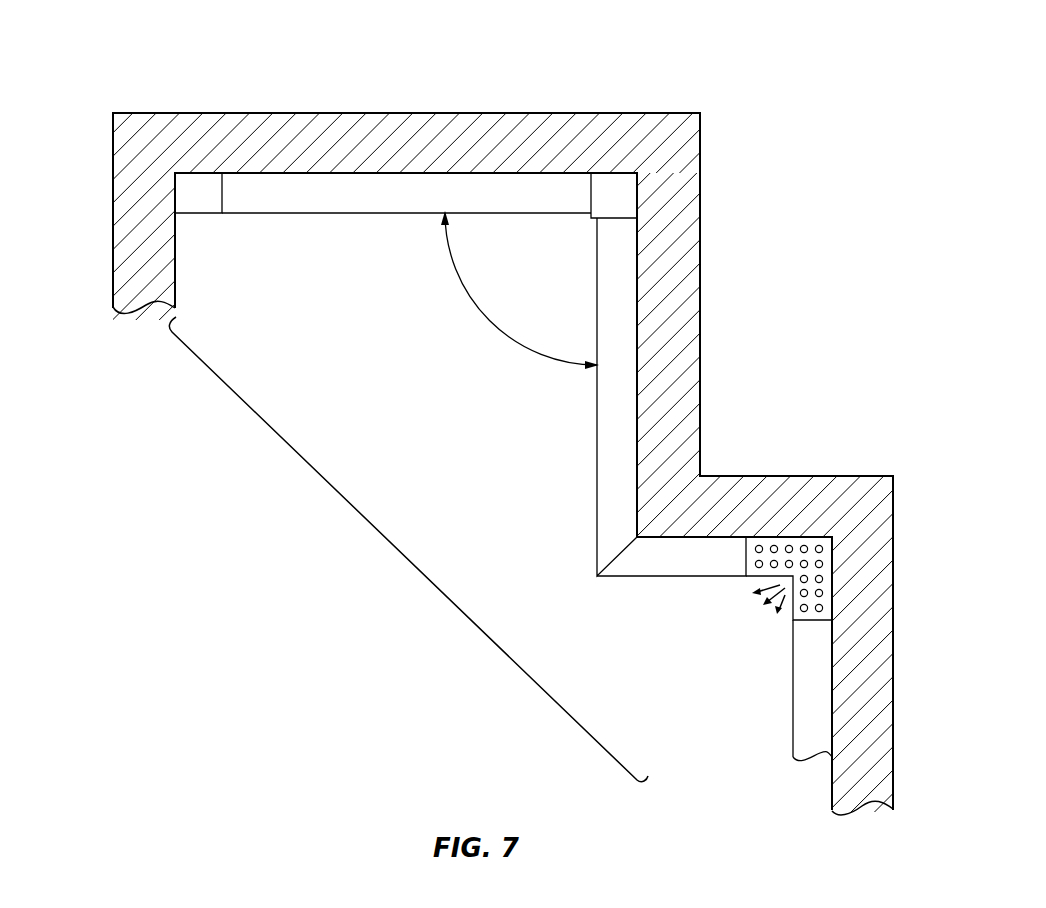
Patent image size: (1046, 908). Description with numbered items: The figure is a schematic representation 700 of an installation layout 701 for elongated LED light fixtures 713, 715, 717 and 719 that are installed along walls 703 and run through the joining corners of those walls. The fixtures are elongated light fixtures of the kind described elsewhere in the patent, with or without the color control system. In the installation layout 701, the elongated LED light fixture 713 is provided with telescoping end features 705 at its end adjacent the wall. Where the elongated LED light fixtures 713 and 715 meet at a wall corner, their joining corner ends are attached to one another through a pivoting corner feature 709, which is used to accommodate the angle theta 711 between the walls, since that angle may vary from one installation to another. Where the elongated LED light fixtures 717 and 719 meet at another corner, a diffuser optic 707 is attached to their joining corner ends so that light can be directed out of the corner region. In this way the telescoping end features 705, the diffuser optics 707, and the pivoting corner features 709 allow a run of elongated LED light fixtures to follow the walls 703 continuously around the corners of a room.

The schematic representation 700 is at (95, 82).
The installation layout 701 is at (403, 554).
The walls 703 is at (693, 307).
The telescoping end features 705 is at (198, 205).
The diffuser optics 707 is at (793, 621).
The pivoting corner features 709 is at (595, 212).
The angle θ 711 is at (485, 318).
The elongated LED light fixture 713 is at (398, 213).
The elongated LED light fixture 715 is at (605, 432).
The elongated LED light fixture 717 is at (679, 568).
The elongated LED light fixture 719 is at (800, 692).